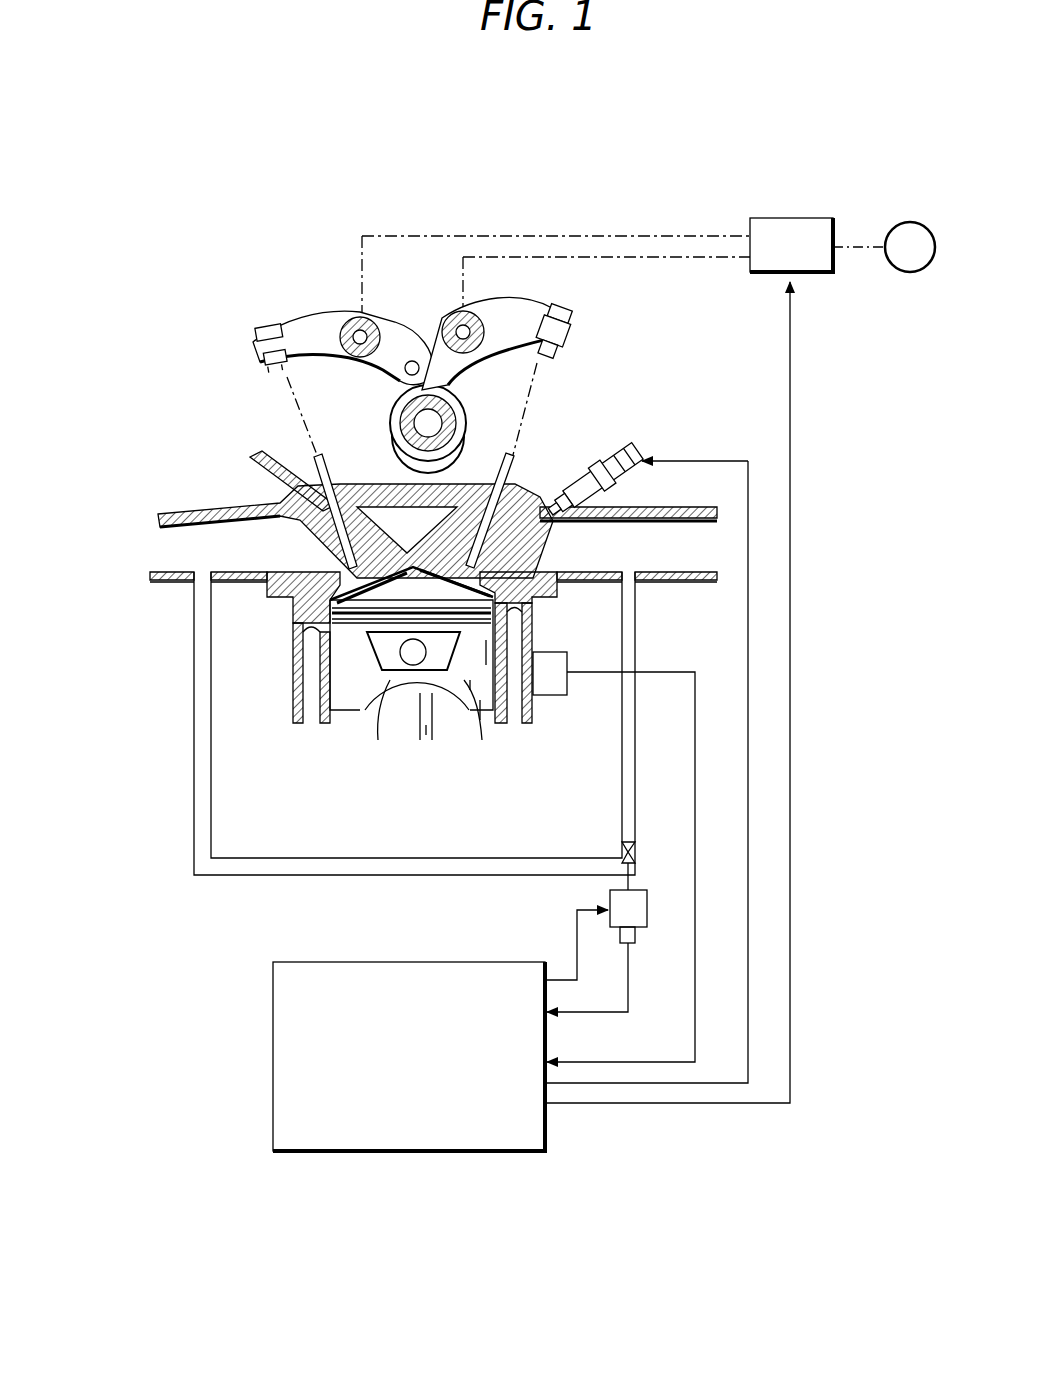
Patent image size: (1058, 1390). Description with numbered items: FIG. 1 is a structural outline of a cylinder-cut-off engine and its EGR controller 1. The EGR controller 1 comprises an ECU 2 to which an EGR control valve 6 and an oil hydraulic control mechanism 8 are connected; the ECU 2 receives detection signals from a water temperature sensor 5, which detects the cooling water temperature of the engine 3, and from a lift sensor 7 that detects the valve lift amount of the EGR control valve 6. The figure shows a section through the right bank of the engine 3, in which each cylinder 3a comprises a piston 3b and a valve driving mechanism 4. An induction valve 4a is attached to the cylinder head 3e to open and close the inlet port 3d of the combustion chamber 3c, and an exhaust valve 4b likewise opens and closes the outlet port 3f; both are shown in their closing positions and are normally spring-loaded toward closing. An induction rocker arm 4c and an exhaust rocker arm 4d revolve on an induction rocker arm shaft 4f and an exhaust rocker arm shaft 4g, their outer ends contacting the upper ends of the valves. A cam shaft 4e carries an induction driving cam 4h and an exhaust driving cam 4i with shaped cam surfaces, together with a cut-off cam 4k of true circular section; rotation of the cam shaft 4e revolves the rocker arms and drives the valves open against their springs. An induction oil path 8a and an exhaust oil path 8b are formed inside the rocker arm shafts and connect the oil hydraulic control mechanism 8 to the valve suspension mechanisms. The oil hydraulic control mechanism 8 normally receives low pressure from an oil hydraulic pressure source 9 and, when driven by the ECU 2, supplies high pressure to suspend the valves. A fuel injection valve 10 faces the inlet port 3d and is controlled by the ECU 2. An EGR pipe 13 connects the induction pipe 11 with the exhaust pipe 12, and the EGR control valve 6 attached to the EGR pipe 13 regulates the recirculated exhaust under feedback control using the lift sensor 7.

The EGR controller 1 is at (704, 1210).
The ECU 2 is at (333, 1152).
The engine 3 is at (141, 823).
The cylinder 3a is at (343, 712).
The piston 3b is at (458, 685).
The combustion chamber 3c is at (397, 596).
The inlet port 3d is at (533, 597).
The cylinder head 3e is at (283, 490).
The outlet port 3f is at (288, 603).
The valve driving mechanism 4 is at (392, 304).
The induction valve 4a is at (482, 542).
The exhaust valve 4b is at (352, 547).
The induction rocker arm 4c is at (567, 338).
The exhaust rocker arm 4d is at (252, 347).
The cam shaft 4e is at (403, 418).
The induction rocker arm shaft 4f is at (448, 316).
The exhaust rocker arm shaft 4g is at (340, 320).
The induction driving cam 4h is at (408, 464).
The exhaust driving cam 4i is at (468, 462).
The cut-off cam 4k is at (443, 392).
The water temperature sensor 5 is at (551, 698).
The EGR control valve 6 is at (640, 888).
The lift sensor 7 is at (634, 946).
The oil hydraulic control mechanism 8 is at (785, 217).
The induction oil path 8a is at (607, 257).
The exhaust oil path 8b is at (481, 236).
The oil hydraulic pressure source 9 is at (908, 222).
The fuel injection valve 10 is at (610, 452).
The induction pipe 11 is at (683, 584).
The exhaust pipe 12 is at (161, 584).
The EGR pipe 13 is at (303, 877).